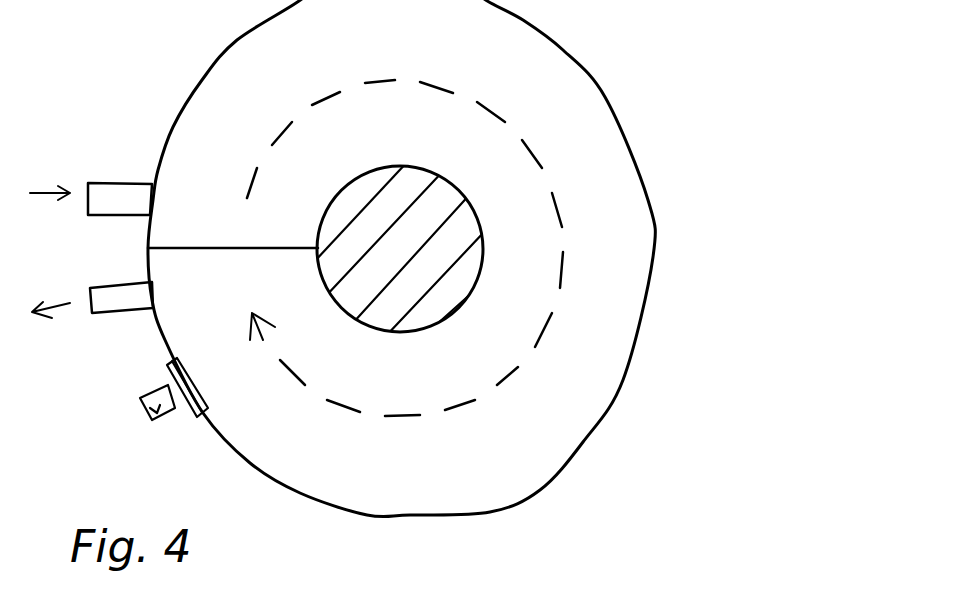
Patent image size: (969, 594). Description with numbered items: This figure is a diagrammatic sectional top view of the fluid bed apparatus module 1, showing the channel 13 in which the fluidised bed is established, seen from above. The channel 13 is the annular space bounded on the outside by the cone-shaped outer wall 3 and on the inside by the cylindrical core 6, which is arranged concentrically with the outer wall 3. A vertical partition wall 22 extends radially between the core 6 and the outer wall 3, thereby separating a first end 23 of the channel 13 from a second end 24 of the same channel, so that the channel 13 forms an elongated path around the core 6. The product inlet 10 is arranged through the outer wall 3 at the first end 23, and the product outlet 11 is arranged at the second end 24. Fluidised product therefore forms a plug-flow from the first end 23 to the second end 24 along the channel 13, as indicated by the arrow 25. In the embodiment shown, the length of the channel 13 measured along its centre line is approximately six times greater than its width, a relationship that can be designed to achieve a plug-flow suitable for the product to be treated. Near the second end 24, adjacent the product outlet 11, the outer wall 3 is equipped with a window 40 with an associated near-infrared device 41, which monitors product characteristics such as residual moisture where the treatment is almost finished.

The fluid bed apparatus module 1 is at (435, 274).
The outer wall 3 is at (605, 97).
The core 6 is at (415, 246).
The product inlet 10 is at (103, 190).
The product outlet 11 is at (117, 302).
The channel 13 is at (602, 332).
The partition wall 22 is at (226, 250).
The first end 23 is at (240, 175).
The second end 24 is at (283, 398).
The arrow 25 is at (347, 402).
The window 40 is at (183, 403).
The near-infrared (NIR) device 41 is at (148, 417).